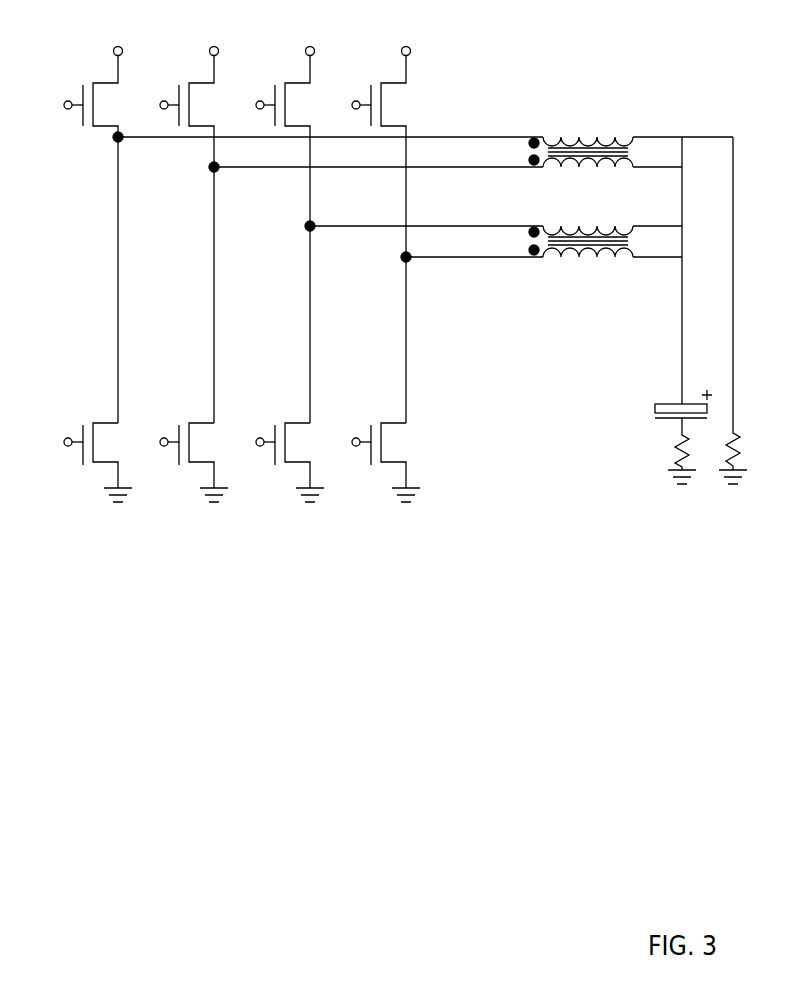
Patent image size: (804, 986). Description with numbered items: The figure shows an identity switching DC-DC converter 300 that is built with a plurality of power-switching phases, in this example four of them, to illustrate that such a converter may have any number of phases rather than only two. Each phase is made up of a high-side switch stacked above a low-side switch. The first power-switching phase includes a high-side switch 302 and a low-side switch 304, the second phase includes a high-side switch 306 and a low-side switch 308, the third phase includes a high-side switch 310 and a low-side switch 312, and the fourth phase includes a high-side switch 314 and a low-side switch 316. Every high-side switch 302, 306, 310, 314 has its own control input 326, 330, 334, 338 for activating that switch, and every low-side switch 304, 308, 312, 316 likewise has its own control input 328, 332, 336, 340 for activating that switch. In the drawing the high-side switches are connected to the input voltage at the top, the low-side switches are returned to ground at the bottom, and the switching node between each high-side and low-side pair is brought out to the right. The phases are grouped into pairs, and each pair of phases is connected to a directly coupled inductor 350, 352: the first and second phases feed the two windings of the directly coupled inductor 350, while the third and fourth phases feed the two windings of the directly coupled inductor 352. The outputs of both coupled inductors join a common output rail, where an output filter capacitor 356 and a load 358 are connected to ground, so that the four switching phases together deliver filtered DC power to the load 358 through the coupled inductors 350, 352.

The identity switching DC-DC converter 300 is at (402, 322).
The high-side switch 302 is at (102, 73).
The high-side switch 306 is at (198, 73).
The high-side switch 310 is at (294, 73).
The high-side switch 314 is at (390, 73).
The low-side switch 304 is at (102, 412).
The low-side switch 308 is at (198, 412).
The low-side switch 312 is at (294, 412).
The low-side switch 316 is at (390, 412).
The control input 326 is at (56, 112).
The control input 330 is at (156, 112).
The control input 334 is at (252, 112).
The control input 338 is at (352, 112).
The control input 328 is at (56, 449).
The control input 332 is at (156, 449).
The control input 336 is at (252, 449).
The control input 340 is at (352, 449).
The directly coupled inductor 350 is at (589, 122).
The directly coupled inductor 352 is at (589, 213).
The output filter capacitor 356 is at (648, 410).
The load 358 is at (748, 448).